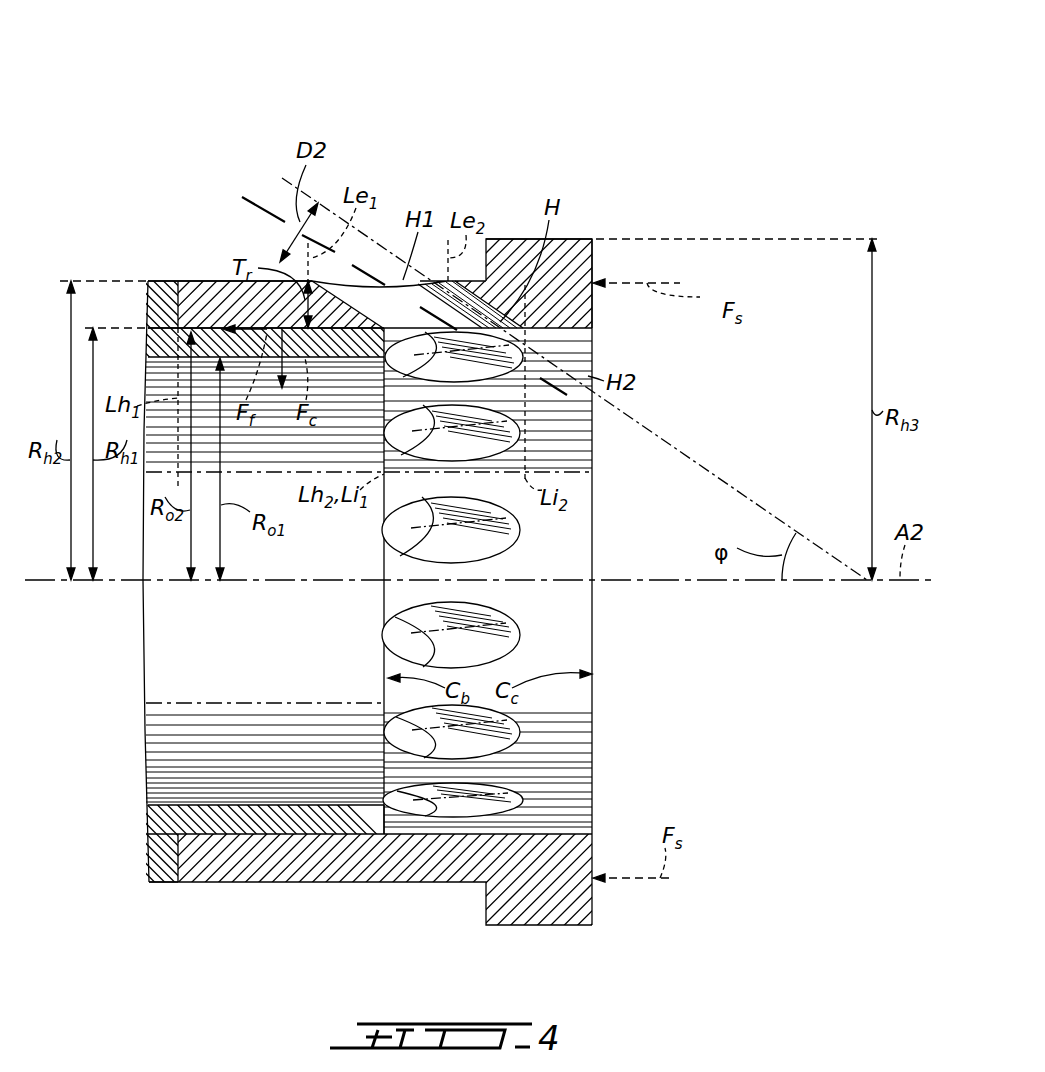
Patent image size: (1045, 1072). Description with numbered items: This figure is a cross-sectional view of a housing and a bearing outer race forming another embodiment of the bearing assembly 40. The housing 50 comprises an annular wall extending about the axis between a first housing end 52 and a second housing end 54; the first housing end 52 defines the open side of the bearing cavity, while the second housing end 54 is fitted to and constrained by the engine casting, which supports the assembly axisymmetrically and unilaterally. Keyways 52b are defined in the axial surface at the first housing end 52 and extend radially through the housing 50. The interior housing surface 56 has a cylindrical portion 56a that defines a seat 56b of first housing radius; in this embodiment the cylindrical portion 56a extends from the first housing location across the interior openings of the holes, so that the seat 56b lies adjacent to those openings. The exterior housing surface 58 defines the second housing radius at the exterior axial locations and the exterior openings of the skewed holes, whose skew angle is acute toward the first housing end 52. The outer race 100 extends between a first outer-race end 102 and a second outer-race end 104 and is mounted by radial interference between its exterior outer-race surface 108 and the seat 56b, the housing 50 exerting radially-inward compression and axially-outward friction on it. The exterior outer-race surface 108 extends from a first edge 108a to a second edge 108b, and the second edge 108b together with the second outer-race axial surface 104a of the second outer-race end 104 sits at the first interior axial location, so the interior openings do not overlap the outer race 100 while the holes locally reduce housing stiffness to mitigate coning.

The bearing assembly 40 is at (135, 122).
The housing 50 is at (560, 898).
The first housing end 52 is at (150, 258).
The keyways 52b is at (146, 284).
The second housing end 54 is at (625, 222).
The interior housing surface 56 is at (427, 581).
The cylindrical portion 56a is at (580, 333).
The seat 56b is at (340, 356).
The exterior housing surface 58 is at (514, 238).
The outer race 100 is at (160, 860).
The first outer-race end 102 is at (142, 348).
The second outer-race end 104 is at (540, 403).
The second outer-race axial surface 104a is at (386, 823).
The exterior outer-race surface 108 is at (212, 320).
The first edge 108a is at (146, 308).
The second edge 108b is at (417, 304).